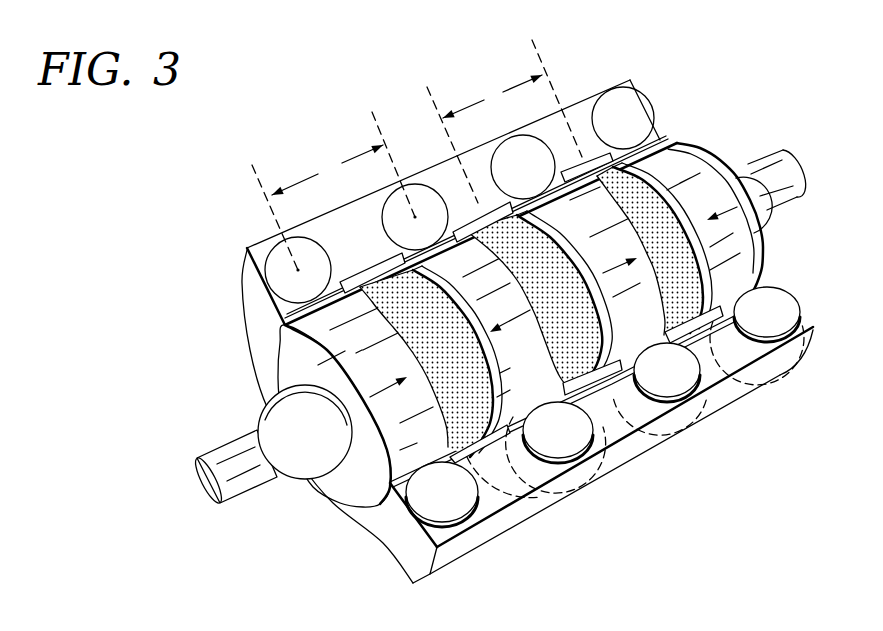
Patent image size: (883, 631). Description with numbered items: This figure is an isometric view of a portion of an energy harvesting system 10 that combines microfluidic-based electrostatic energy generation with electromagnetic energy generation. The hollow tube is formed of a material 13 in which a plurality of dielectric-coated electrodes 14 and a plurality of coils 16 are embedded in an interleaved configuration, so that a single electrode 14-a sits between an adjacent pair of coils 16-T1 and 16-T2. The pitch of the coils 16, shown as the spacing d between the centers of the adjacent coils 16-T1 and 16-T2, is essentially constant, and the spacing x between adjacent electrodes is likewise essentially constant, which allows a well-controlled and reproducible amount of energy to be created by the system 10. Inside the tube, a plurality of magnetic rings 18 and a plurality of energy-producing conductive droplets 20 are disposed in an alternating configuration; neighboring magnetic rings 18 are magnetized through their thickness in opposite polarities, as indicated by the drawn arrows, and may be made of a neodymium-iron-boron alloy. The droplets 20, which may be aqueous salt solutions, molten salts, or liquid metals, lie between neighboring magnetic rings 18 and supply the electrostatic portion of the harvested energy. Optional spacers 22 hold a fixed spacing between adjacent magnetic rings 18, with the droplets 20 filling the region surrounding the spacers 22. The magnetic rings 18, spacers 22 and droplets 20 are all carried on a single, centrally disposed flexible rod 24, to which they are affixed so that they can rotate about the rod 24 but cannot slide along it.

The energy harvesting system 10 is at (160, 160).
The material 13 is at (253, 282).
The dielectric-coated electrodes 14 is at (593, 167).
The electrode 14-a is at (702, 335).
The coils 16 is at (637, 112).
The coil 16-T1 is at (667, 380).
The coil 16-T2 is at (775, 306).
The magnetic rings 18 is at (387, 430).
The energy-producing droplets 20 is at (465, 418).
The spacers 22 is at (273, 417).
The flexible rod 24 is at (213, 470).